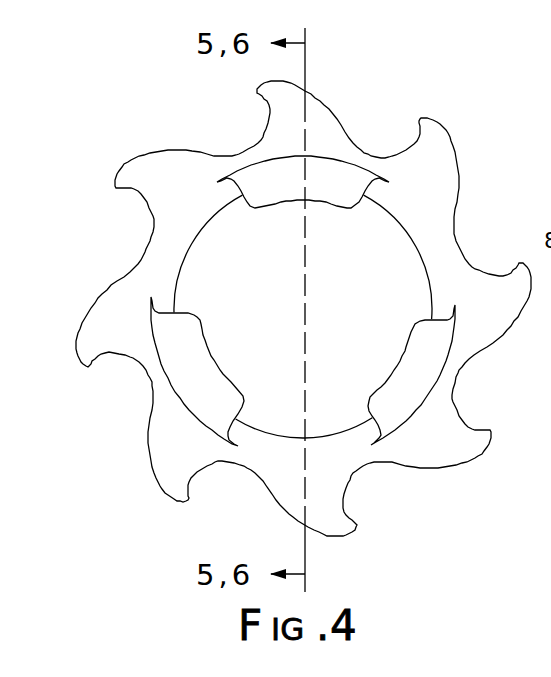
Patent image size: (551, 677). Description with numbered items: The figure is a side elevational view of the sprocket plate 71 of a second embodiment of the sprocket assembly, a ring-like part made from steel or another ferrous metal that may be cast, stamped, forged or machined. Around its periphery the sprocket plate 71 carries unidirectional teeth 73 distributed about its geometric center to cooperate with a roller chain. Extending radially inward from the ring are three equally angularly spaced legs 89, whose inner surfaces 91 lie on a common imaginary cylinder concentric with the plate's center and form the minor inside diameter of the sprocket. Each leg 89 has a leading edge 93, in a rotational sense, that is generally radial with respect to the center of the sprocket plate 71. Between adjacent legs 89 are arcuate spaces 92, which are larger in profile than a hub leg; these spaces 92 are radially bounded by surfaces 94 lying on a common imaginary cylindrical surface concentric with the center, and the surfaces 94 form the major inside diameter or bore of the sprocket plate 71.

The sprocket plate 71 is at (458, 120).
The peripheral unidirectional teeth 73 is at (440, 155).
The legs 89 is at (333, 193).
The inner surfaces 91 is at (287, 202).
The arcuate spaces 92 is at (392, 269).
The leading edges 93 is at (418, 140).
The surfaces 94 is at (183, 292).